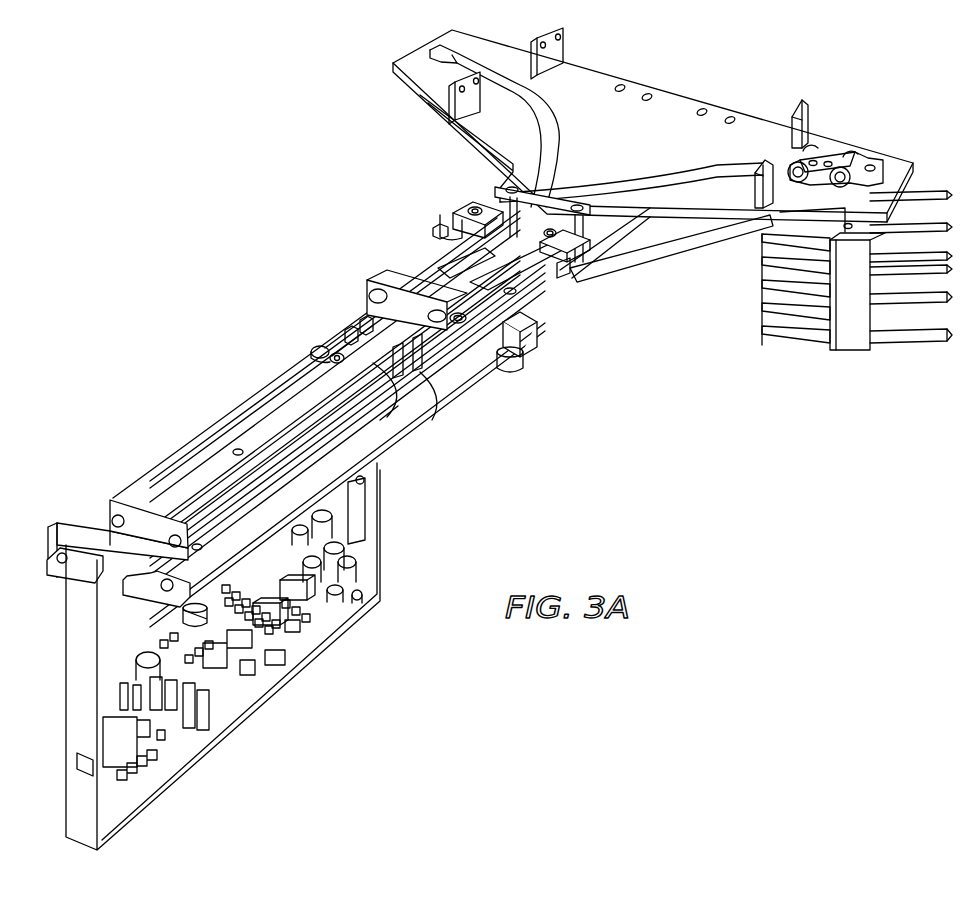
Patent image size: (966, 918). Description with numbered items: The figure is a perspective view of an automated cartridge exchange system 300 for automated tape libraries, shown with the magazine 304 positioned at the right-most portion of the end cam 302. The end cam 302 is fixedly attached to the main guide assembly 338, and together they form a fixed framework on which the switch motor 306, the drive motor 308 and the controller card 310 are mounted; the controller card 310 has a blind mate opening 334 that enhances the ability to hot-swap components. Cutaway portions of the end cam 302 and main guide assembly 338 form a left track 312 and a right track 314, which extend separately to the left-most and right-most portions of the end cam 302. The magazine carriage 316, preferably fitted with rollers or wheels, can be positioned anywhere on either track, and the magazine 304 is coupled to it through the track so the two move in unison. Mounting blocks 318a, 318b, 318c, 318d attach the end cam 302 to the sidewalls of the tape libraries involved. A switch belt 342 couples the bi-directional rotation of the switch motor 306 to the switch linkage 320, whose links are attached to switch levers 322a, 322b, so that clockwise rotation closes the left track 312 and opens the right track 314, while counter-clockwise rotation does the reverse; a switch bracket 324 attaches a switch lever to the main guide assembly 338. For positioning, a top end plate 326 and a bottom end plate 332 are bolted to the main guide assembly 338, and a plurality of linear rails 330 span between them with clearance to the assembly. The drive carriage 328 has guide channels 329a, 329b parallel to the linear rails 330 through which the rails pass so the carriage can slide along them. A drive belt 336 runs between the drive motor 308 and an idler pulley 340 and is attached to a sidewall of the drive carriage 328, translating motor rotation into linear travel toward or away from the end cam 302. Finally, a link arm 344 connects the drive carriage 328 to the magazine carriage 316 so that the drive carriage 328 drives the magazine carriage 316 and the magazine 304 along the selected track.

The automated cartridge exchange system 300 is at (222, 190).
The end cam 302 is at (683, 101).
The magazine 304 is at (853, 350).
The switch motor 306 is at (538, 344).
The drive motor 308 is at (184, 620).
The controller card 310 is at (207, 703).
The left track 312 is at (533, 88).
The right track 314 is at (687, 177).
The magazine carriage 316 is at (873, 160).
The mounting block 318a is at (565, 48).
The mounting block 318b is at (803, 100).
The mounting block 318c is at (452, 98).
The mounting block 318d is at (768, 158).
The switch linkage 320 is at (496, 187).
The switch lever 322a is at (458, 205).
The switch lever 322b is at (613, 253).
The switch bracket 324 is at (440, 225).
The top end plate 326 is at (373, 280).
The drive carriage 328 is at (335, 338).
The guide channel 329a is at (313, 342).
The guide channel 329b is at (388, 427).
The linear rails 330 is at (297, 437).
The bottom end plate 332 is at (112, 502).
The blind mate opening 334 is at (363, 523).
The drive belt 336 is at (430, 392).
The main guide assembly 338 is at (392, 449).
The idler pulley 340 is at (458, 312).
The switch belt 342 is at (558, 278).
The link arm 344 is at (718, 243).